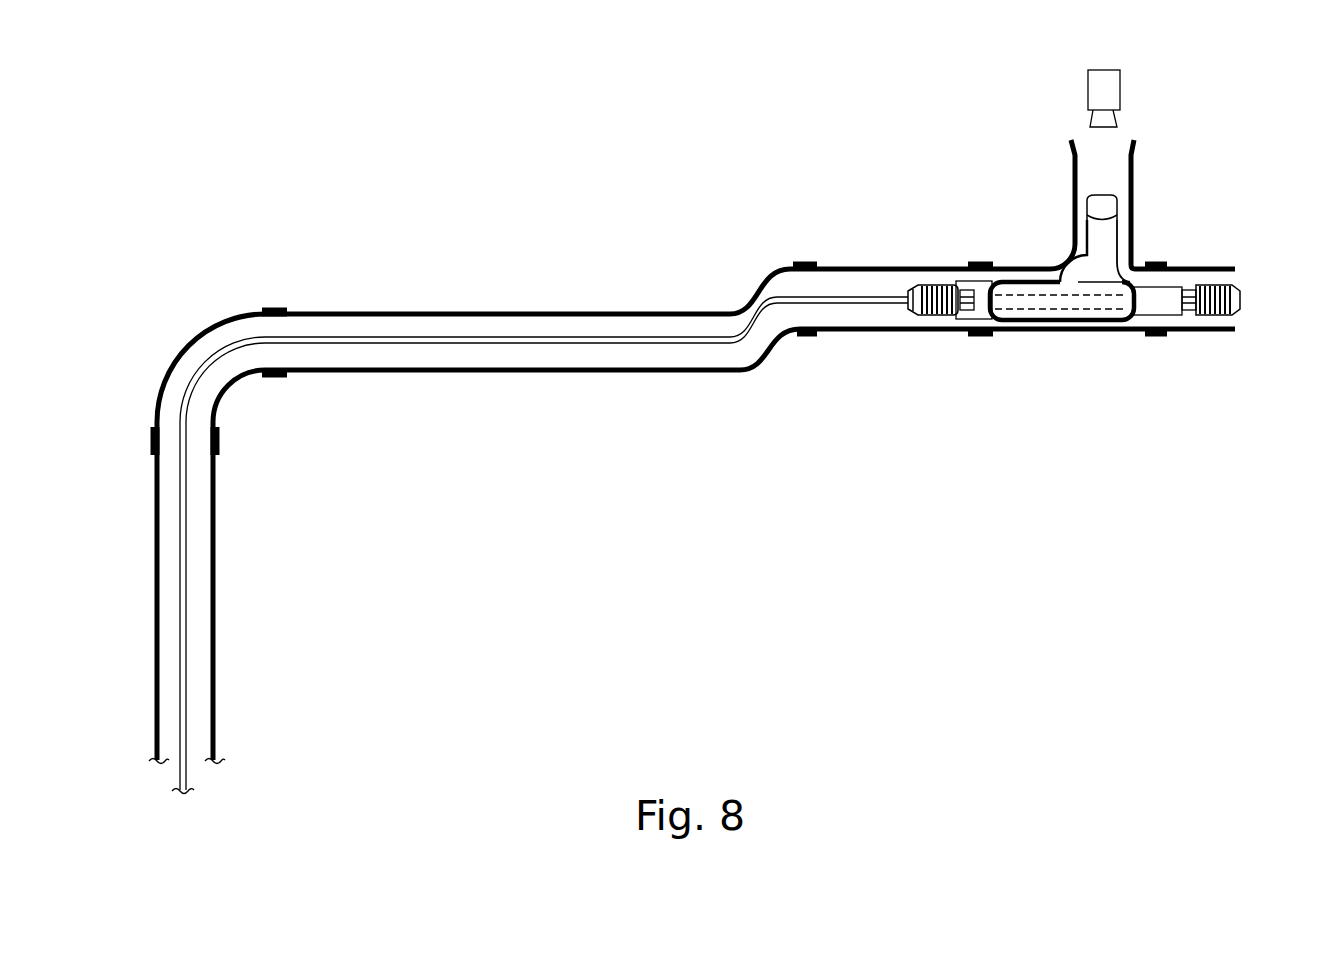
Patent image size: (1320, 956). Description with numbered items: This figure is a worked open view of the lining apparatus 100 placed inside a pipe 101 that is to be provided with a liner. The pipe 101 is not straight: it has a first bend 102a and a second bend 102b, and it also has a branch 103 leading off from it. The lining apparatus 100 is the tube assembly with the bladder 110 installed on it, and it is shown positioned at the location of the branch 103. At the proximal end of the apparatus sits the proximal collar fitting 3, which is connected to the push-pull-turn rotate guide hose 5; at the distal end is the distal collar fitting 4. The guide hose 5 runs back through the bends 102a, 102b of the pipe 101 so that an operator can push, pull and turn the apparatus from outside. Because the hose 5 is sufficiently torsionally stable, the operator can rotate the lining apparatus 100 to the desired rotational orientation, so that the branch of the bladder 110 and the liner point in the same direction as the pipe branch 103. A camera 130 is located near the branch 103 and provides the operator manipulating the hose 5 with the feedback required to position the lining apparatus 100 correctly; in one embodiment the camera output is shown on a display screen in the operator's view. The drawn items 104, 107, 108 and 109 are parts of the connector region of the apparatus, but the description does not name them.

The proximal collar fitting 3 is at (935, 317).
The distal collar fitting 4 is at (1220, 317).
The push-pull-turn rotate guide hose 5 is at (548, 337).
The lining apparatus 100 is at (1079, 298).
The pipe 101 is at (367, 374).
The bend 102a is at (193, 334).
The bend 102b is at (742, 287).
The branch 103 is at (1132, 205).
The nut 104 is at (1163, 313).
The coupling collar 107 is at (1155, 337).
The ribbed connector nut 108 is at (935, 288).
The sleeve 109 is at (1218, 285).
The bladder 110 is at (1042, 282).
The camera 130 is at (1115, 87).